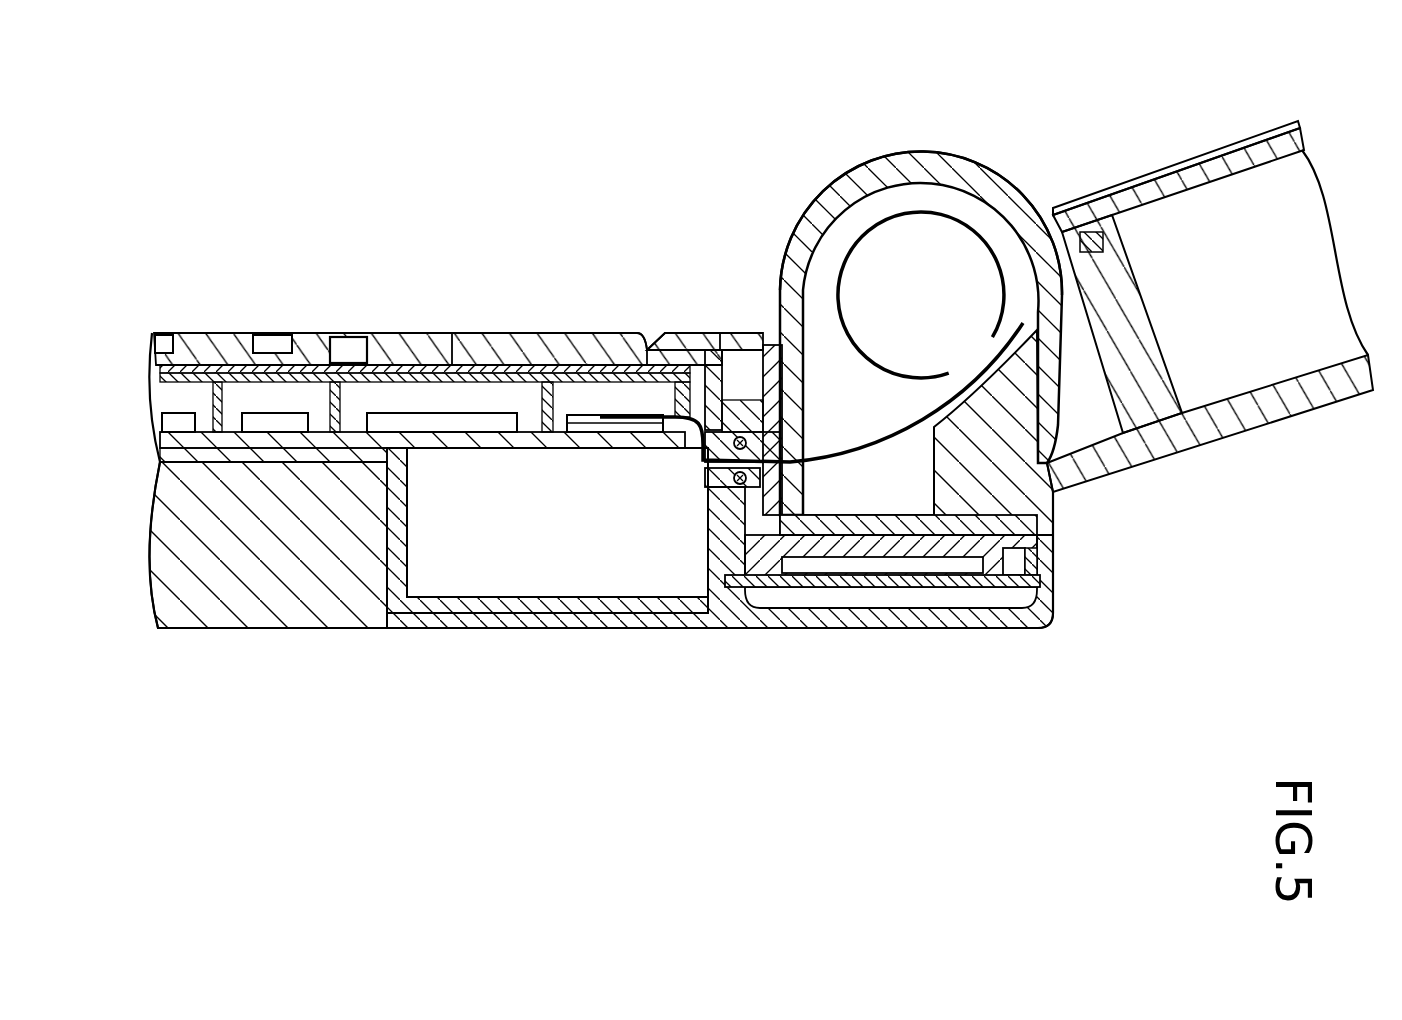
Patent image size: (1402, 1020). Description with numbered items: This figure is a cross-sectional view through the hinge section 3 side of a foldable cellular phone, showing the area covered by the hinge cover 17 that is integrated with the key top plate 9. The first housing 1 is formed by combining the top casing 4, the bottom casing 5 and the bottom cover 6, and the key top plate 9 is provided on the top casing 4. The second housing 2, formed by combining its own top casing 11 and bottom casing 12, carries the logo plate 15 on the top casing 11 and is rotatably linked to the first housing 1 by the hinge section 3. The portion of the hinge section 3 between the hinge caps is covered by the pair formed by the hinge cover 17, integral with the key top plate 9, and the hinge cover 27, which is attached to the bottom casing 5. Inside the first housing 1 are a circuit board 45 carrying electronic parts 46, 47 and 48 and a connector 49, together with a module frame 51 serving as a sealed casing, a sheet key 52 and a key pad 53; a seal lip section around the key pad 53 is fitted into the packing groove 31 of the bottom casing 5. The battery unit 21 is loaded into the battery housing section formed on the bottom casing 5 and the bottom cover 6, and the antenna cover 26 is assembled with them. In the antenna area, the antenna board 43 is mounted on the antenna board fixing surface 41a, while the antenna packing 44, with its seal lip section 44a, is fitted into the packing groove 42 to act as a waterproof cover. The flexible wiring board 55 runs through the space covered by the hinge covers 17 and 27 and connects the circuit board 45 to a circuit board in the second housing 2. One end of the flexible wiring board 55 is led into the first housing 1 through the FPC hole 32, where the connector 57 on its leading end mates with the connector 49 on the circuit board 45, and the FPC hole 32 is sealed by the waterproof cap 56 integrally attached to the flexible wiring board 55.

The first housing 1 is at (178, 630).
The second housing 2 is at (1217, 280).
The hinge section 3 is at (1005, 172).
The top casing 4 is at (167, 336).
The bottom casing 5 is at (497, 600).
The bottom cover 6 is at (563, 612).
The key top plate 9 is at (680, 333).
The top casing 11 is at (1280, 157).
The bottom casing 12 is at (1230, 420).
The logo plate 15 is at (1248, 143).
The hinge cover 17 is at (942, 150).
The battery unit 21 is at (283, 600).
The antenna cover 26 is at (957, 623).
The hinge cover 27 is at (1015, 500).
The packing groove 31 is at (733, 393).
The FPC hole 32 is at (727, 472).
The antenna board fixing surface 41a is at (797, 562).
The packing groove 42 is at (1013, 563).
The antenna board 43 is at (820, 567).
The antenna packing 44 is at (885, 580).
The seal lip section 44a is at (1030, 567).
The circuit board 45 is at (166, 440).
The electronic part 46 is at (170, 420).
The electronic part 47 is at (277, 412).
The electronic part 48 is at (447, 430).
The connector 49 is at (595, 430).
The module frame 51 is at (456, 380).
The sheet key 52 is at (388, 366).
The key pad 53 is at (538, 334).
The flexible wiring board 55 is at (870, 230).
The waterproof cap 56 is at (712, 470).
The connector 57 is at (597, 417).